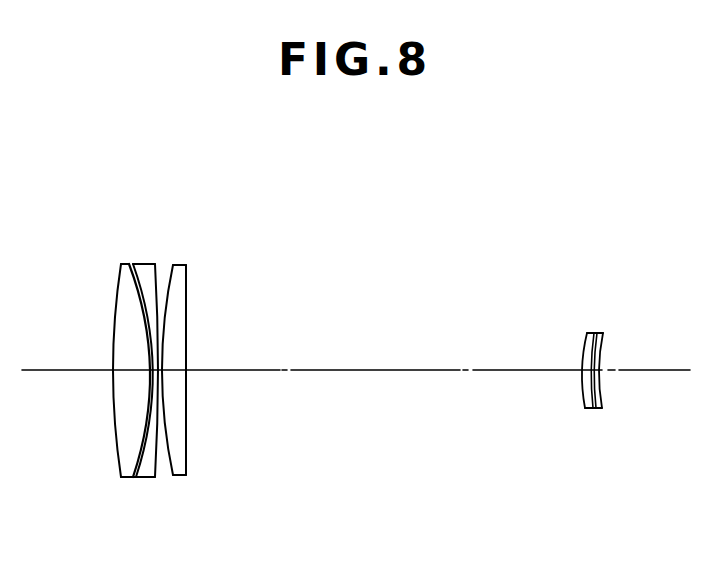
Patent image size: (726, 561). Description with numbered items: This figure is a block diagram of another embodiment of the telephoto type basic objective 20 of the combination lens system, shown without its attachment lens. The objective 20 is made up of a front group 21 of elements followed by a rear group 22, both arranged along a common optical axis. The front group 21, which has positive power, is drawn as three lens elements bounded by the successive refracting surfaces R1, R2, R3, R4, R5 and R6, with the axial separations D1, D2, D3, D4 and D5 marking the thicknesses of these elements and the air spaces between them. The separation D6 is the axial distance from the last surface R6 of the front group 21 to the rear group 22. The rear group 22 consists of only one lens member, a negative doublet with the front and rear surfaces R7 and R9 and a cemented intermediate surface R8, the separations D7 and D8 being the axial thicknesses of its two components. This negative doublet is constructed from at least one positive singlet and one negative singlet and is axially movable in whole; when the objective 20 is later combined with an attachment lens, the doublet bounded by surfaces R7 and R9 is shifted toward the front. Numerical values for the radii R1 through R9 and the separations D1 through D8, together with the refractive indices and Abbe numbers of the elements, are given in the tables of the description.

The telephoto type objective 20 is at (104, 190).
The front group 21 is at (190, 247).
The rear group 22 is at (624, 243).
The refracting surface radius of curvature R1 is at (118, 462).
The refracting surface radius of curvature R2 is at (122, 470).
The refracting surface radius of curvature R3 is at (137, 478).
The refracting surface radius of curvature R4 is at (157, 478).
The refracting surface radius of curvature R5 is at (168, 474).
The refracting surface radius of curvature R6 is at (188, 472).
The front surface of negative doublet R7 is at (582, 397).
The refracting surface radius of curvature R8 is at (595, 409).
The rear surface of negative doublet R9 is at (602, 398).
The axial separation D1 is at (132, 370).
The axial separation D2 is at (148, 368).
The axial separation D3 is at (159, 367).
The axial separation D4 is at (167, 368).
The axial separation D5 is at (175, 368).
The axial separation D6 is at (382, 369).
The axial separation D7 is at (583, 364).
The axial separation D8 is at (601, 364).